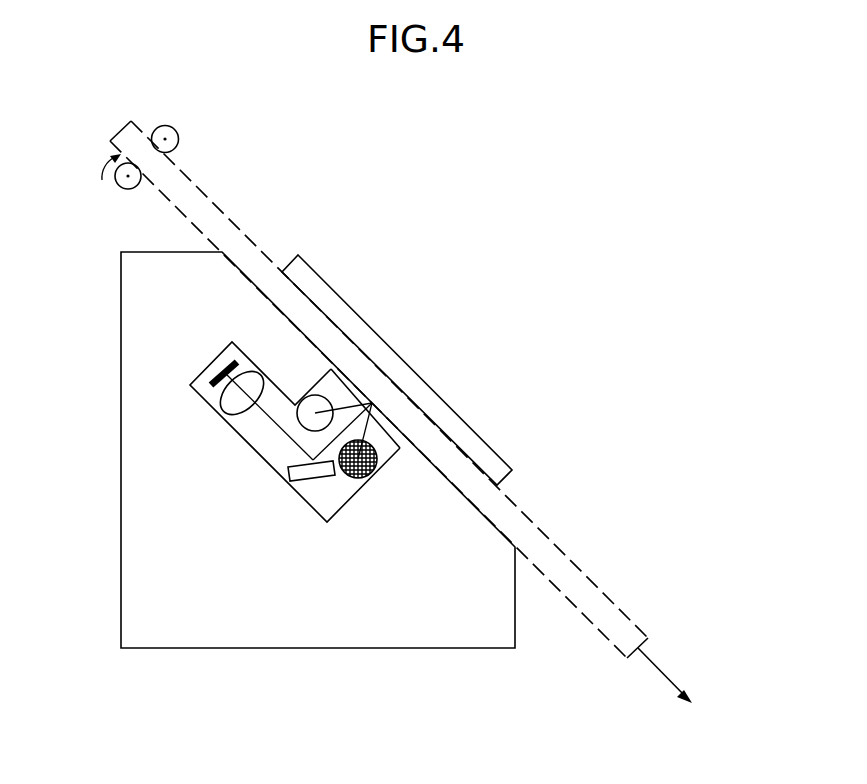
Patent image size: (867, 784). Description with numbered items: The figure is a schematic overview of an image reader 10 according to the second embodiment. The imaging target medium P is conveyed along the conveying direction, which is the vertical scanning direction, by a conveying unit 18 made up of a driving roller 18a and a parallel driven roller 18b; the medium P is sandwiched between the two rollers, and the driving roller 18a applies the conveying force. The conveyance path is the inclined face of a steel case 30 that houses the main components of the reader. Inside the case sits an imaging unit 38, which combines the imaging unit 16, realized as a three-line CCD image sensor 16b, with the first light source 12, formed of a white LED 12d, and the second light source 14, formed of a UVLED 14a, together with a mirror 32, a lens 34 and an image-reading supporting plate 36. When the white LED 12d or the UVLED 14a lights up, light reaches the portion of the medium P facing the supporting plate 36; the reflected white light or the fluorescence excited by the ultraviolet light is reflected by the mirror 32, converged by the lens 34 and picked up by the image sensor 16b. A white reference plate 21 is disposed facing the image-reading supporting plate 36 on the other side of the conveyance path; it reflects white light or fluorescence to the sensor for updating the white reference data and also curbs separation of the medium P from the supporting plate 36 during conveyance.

The image reader 10 is at (539, 146).
The imaging target medium P is at (127, 125).
The conveying unit 18 is at (150, 159).
The driving roller 18a is at (115, 187).
The driven roller 18b is at (178, 132).
The white reference plate 21 is at (407, 363).
The steel case 30 is at (121, 550).
The imaging unit 38 is at (302, 506).
The image-reading supporting plate 36 is at (398, 441).
The imaging unit 16 is at (185, 360).
The image sensor 16b is at (221, 373).
The lens 34 is at (217, 409).
The first light source 12 is at (249, 428).
The white LED 12d is at (297, 414).
The mirror 32 is at (284, 481).
The second light source 14 is at (374, 493).
The UVLED 14a is at (355, 479).